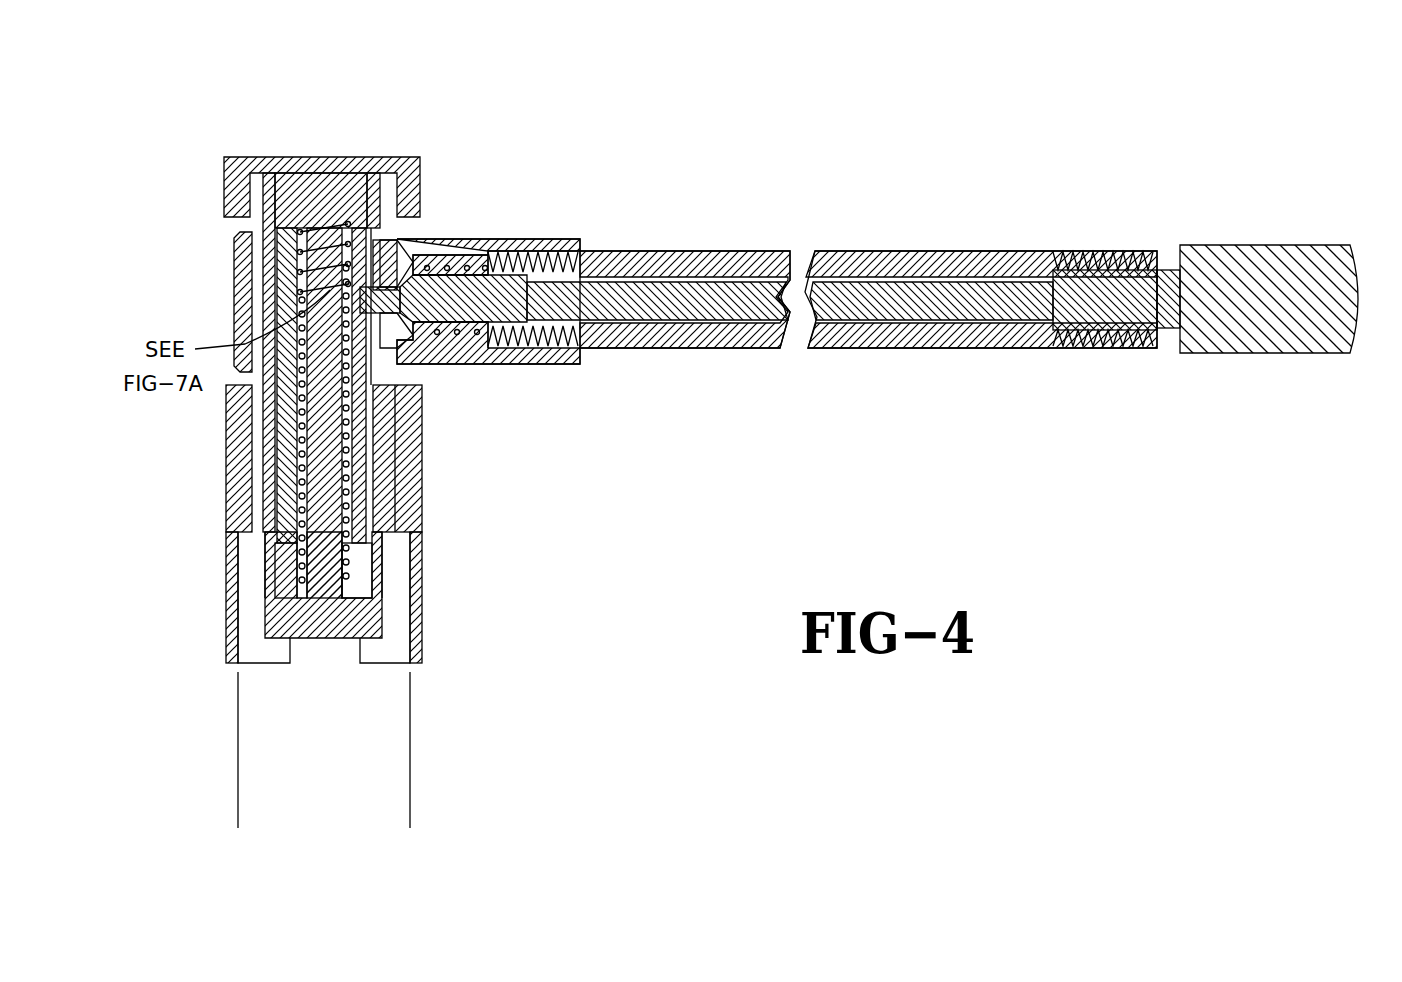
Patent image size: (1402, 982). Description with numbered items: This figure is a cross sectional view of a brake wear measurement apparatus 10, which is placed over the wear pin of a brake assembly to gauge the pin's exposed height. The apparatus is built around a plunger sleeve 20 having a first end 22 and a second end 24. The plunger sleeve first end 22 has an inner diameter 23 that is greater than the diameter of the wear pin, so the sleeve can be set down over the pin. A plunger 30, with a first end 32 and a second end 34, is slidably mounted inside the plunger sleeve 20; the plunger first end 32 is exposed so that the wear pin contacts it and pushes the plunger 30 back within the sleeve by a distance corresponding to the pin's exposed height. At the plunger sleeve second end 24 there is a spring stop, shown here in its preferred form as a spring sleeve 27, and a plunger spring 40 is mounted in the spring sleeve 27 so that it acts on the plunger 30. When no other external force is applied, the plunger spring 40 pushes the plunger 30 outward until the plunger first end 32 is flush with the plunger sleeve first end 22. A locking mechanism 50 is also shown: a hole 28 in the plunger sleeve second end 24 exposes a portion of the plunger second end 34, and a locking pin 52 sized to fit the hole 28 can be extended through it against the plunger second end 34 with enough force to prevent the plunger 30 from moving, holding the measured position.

The brake wear measurement apparatus 10 is at (906, 167).
The plunger sleeve 20 is at (240, 470).
The plunger sleeve first end 22 is at (240, 663).
The plunger sleeve first end inner diameter 23 is at (410, 810).
The plunger sleeve second end 24 is at (257, 192).
The spring sleeve 27 is at (293, 203).
The hole 28 is at (380, 355).
The plunger 30 is at (335, 608).
The plunger first end 32 is at (318, 630).
The plunger second end 34 is at (260, 253).
The plunger spring 40 is at (318, 255).
The locking mechanism 50 is at (468, 226).
The locking pin 52 is at (437, 295).